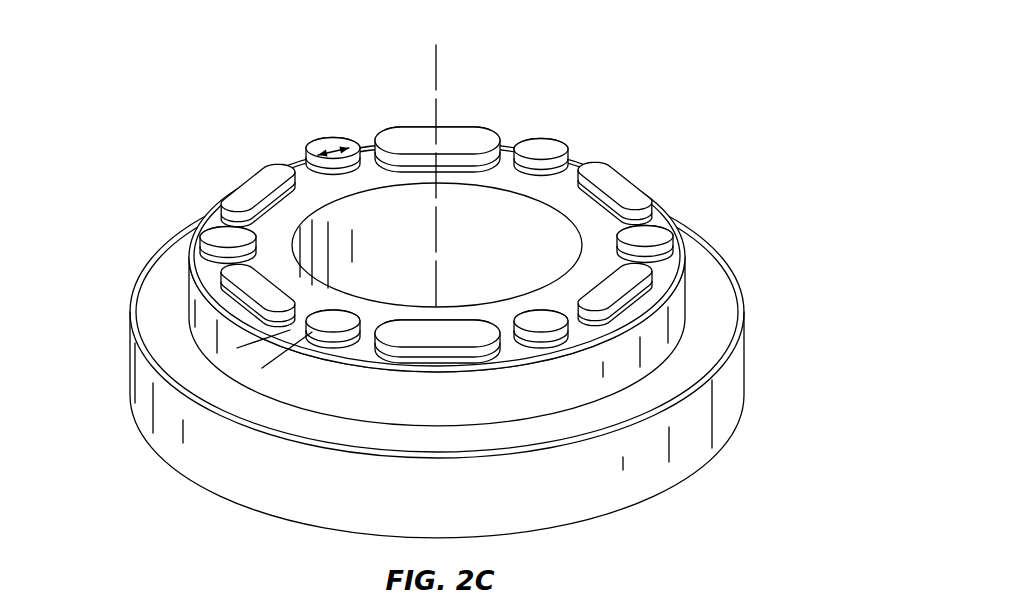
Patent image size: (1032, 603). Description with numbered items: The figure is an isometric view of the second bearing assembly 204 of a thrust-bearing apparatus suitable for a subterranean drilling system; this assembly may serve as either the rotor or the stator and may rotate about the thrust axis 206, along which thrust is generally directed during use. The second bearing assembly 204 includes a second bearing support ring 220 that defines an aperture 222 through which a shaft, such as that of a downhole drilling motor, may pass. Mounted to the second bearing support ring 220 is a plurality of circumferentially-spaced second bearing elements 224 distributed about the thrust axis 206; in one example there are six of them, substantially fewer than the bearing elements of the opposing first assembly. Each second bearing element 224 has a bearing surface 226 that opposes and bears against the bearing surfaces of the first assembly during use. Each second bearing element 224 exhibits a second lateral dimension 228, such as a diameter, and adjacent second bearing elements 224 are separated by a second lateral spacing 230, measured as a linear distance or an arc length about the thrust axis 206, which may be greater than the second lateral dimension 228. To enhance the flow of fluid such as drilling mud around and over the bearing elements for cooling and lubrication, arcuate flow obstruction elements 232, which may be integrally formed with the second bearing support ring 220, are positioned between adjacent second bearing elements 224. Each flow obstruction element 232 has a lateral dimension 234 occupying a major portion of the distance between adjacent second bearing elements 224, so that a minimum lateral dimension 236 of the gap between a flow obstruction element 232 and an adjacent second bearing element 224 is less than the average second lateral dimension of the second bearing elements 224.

The second bearing assembly 204 is at (780, 148).
The thrust axis 206 is at (448, 72).
The second bearing support ring 220 is at (690, 440).
The aperture 222 is at (325, 257).
The second bearing elements 224 is at (360, 139).
The bearing surface 226 is at (545, 150).
The second lateral dimension 228 is at (320, 155).
The second lateral spacing 230 is at (290, 168).
The flow obstruction element 232 is at (238, 348).
The lateral dimension 234 is at (284, 304).
The minimum lateral dimension 236 is at (262, 369).